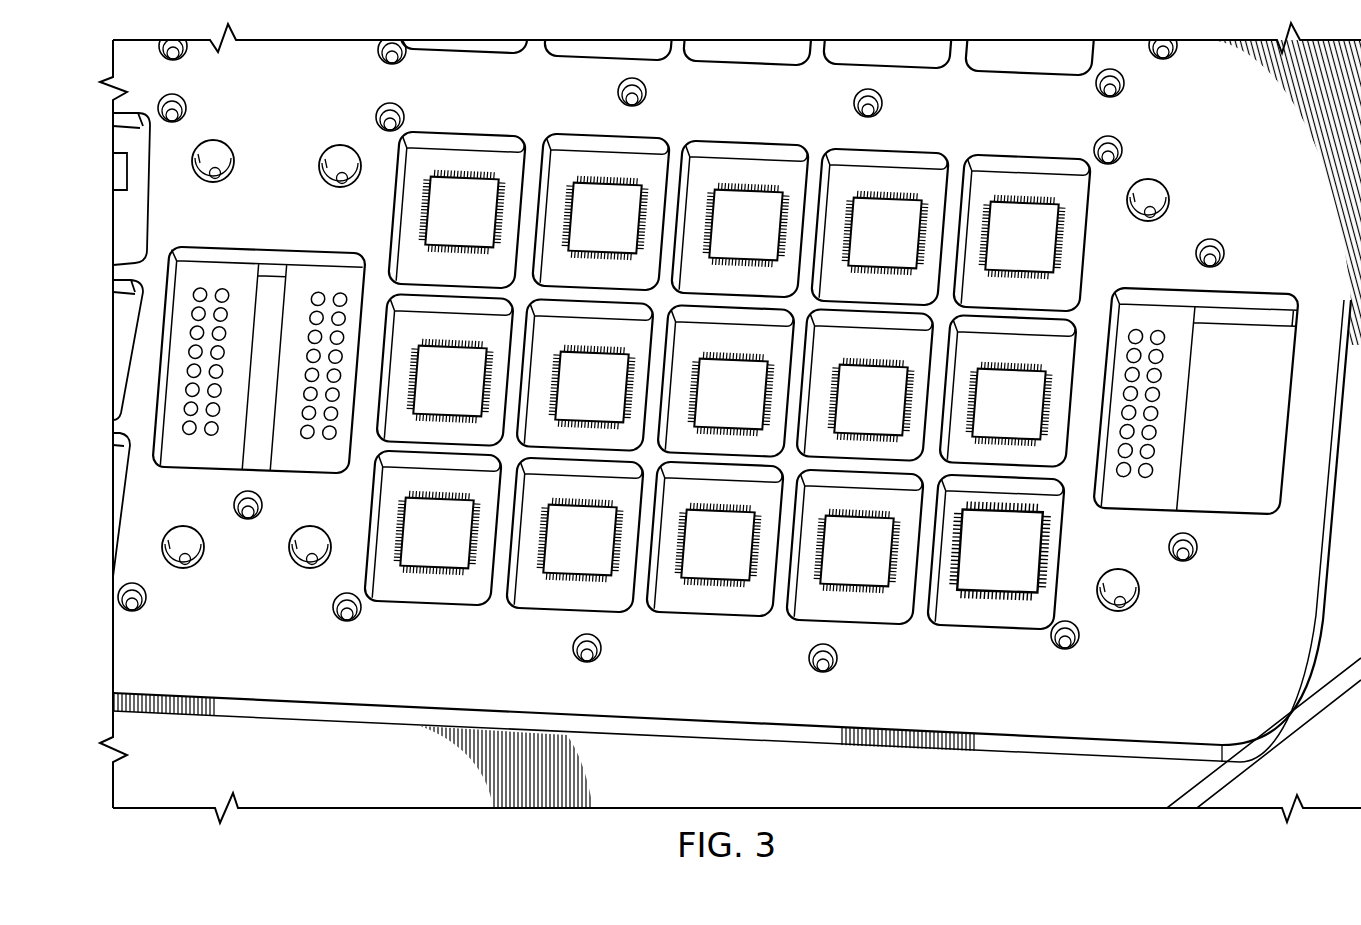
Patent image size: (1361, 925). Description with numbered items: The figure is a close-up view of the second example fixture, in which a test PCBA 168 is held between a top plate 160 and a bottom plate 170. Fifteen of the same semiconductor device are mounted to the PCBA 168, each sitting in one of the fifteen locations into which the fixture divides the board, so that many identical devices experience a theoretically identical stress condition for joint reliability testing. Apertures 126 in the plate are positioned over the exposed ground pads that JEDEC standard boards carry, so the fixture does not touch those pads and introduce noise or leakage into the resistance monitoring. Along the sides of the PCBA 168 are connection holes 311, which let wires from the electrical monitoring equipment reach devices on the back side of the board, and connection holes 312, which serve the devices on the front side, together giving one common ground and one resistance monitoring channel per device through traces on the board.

The apertures 126 is at (216, 148).
The top plate 160 is at (273, 633).
The test PCBA 168 is at (1196, 401).
The bottom plate 170 is at (315, 775).
The connection holes 311 is at (328, 285).
The connection holes 312 is at (1168, 362).